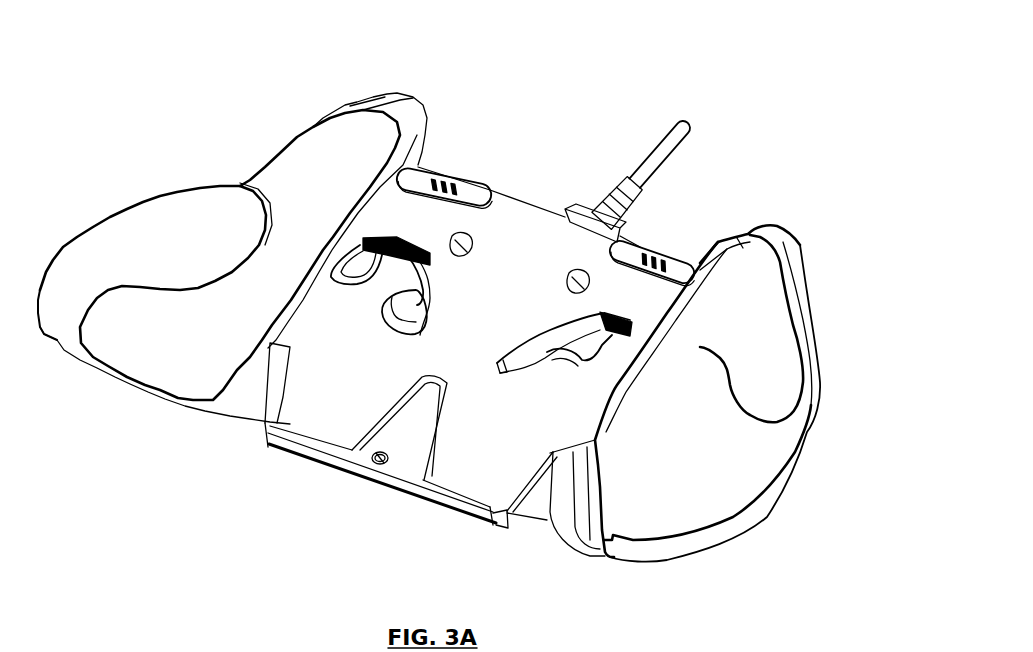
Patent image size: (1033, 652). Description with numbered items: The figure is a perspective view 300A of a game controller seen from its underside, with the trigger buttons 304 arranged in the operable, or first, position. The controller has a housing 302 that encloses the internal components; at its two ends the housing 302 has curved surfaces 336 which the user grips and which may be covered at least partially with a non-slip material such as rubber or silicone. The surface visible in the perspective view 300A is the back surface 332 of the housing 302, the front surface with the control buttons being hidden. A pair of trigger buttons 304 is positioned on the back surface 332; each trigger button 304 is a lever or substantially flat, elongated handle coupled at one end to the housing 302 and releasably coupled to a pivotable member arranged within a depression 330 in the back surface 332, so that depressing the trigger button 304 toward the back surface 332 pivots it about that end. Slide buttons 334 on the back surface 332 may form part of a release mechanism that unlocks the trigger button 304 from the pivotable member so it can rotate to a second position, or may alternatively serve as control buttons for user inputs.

The perspective view 300A is at (747, 65).
The housing 302 is at (248, 160).
The trigger button 304 is at (351, 300).
The depression 330 is at (420, 307).
The back surface 332 is at (337, 407).
The slide button 334 is at (440, 174).
The curved surfaces 336 is at (70, 300).